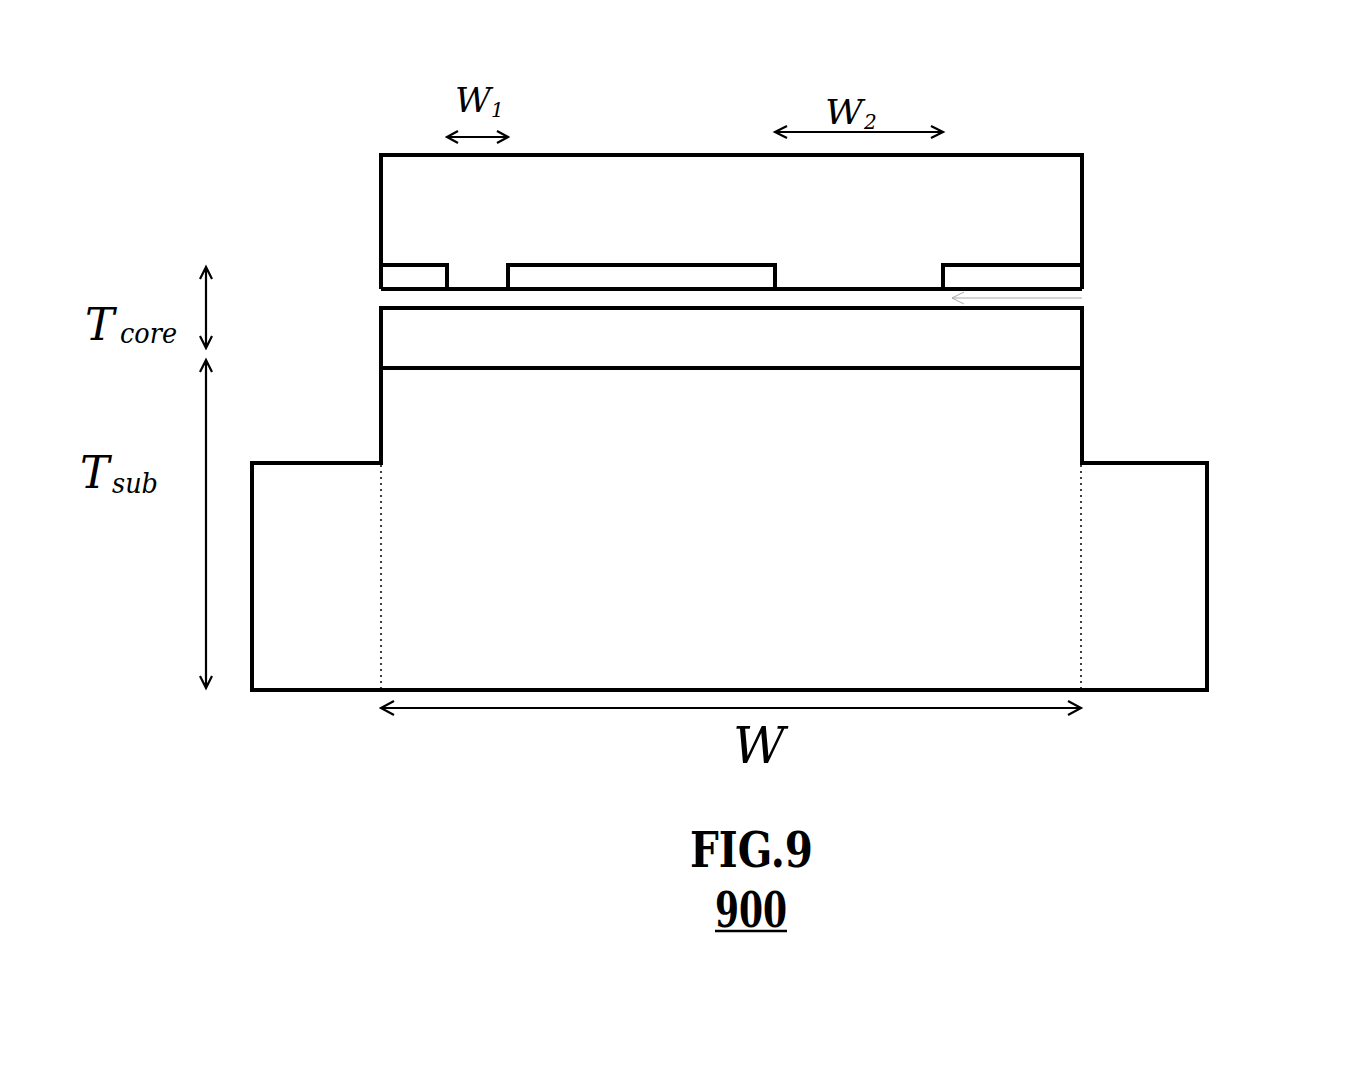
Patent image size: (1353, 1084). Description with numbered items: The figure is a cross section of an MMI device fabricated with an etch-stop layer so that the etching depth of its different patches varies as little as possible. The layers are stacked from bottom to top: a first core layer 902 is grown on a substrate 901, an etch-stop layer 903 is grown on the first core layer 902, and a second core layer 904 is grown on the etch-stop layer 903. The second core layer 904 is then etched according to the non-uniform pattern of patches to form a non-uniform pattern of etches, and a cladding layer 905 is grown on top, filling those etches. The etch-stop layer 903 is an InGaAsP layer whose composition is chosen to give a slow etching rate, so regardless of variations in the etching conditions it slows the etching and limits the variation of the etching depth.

The substrate 901 is at (1207, 527).
The first core layer 902 is at (1082, 352).
The etch-stop layer 903 is at (1082, 298).
The second core layer 904 is at (379, 280).
The cladding layer 905 is at (1082, 228).